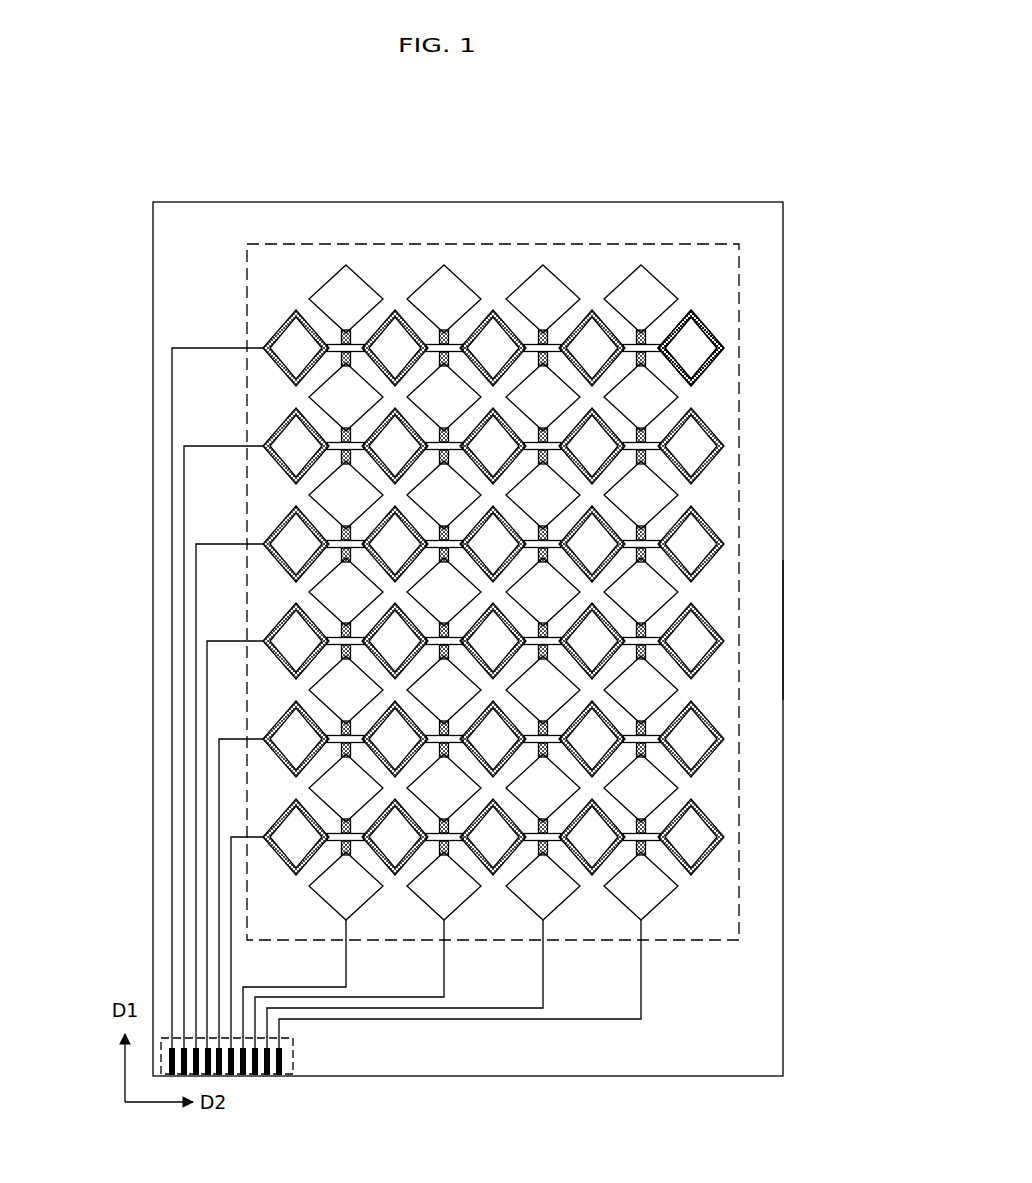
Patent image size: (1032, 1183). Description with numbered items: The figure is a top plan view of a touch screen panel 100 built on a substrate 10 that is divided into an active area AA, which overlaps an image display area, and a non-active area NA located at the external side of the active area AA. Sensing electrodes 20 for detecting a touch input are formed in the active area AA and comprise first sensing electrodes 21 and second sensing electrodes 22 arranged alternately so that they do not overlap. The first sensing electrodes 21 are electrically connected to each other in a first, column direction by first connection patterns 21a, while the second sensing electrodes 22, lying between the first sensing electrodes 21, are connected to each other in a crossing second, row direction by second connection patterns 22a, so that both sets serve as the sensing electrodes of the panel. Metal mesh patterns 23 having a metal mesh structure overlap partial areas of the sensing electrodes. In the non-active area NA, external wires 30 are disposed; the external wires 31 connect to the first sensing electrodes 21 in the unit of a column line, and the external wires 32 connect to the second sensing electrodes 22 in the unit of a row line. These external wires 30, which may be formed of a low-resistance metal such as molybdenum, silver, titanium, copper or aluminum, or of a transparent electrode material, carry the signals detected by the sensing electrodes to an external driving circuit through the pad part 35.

The touch screen panel 100 is at (702, 114).
The substrate 10 is at (702, 211).
The sensing electrodes 20 is at (285, 148).
The first sensing electrodes 21 is at (335, 285).
The second sensing electrodes 22 is at (300, 343).
The first connection patterns 21a is at (355, 335).
The second connection patterns 22a is at (368, 347).
The metal mesh patterns 23 is at (712, 332).
The external wires 30 is at (118, 883).
The external wires 31 is at (348, 967).
The external wires 32 is at (172, 893).
The pad part 35 is at (293, 1060).
The active area AA is at (739, 387).
The non-active area NA is at (770, 492).